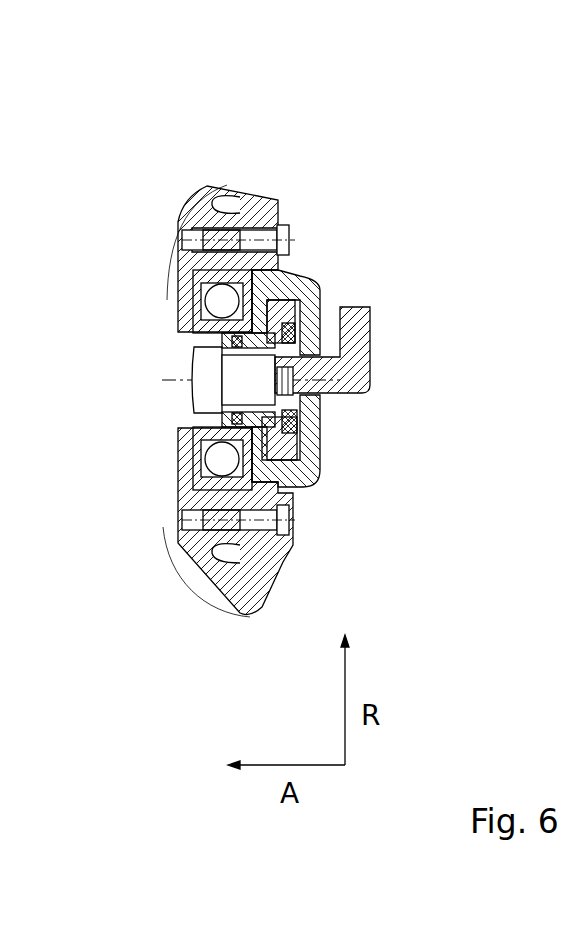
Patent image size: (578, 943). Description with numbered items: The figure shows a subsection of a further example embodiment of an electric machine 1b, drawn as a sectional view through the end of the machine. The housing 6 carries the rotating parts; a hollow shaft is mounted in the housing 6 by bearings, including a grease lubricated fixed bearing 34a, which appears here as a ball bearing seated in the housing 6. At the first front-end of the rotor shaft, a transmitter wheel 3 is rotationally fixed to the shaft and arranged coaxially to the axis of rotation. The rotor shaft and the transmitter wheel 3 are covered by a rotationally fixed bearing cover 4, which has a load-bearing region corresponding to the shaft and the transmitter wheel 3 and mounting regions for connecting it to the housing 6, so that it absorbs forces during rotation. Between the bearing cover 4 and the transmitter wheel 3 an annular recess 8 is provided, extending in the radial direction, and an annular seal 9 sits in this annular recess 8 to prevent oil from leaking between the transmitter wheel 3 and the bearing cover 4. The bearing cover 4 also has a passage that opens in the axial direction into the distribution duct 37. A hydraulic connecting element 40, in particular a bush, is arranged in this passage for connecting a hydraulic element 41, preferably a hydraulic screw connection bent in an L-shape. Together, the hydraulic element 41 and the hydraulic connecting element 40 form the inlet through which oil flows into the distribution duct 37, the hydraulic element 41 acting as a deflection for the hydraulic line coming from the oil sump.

The electric machine 1b is at (115, 176).
The housing 6 is at (202, 213).
The grease lubricated fixed bearing 34a is at (222, 292).
The transmitter wheel 3 is at (291, 300).
The bearing cover 4 is at (313, 278).
The hydraulic element 41 is at (352, 323).
The hydraulic connecting element 40 is at (322, 360).
The distribution duct 37 is at (250, 392).
The annular seal 9 is at (305, 418).
The annular recess 8 is at (318, 440).